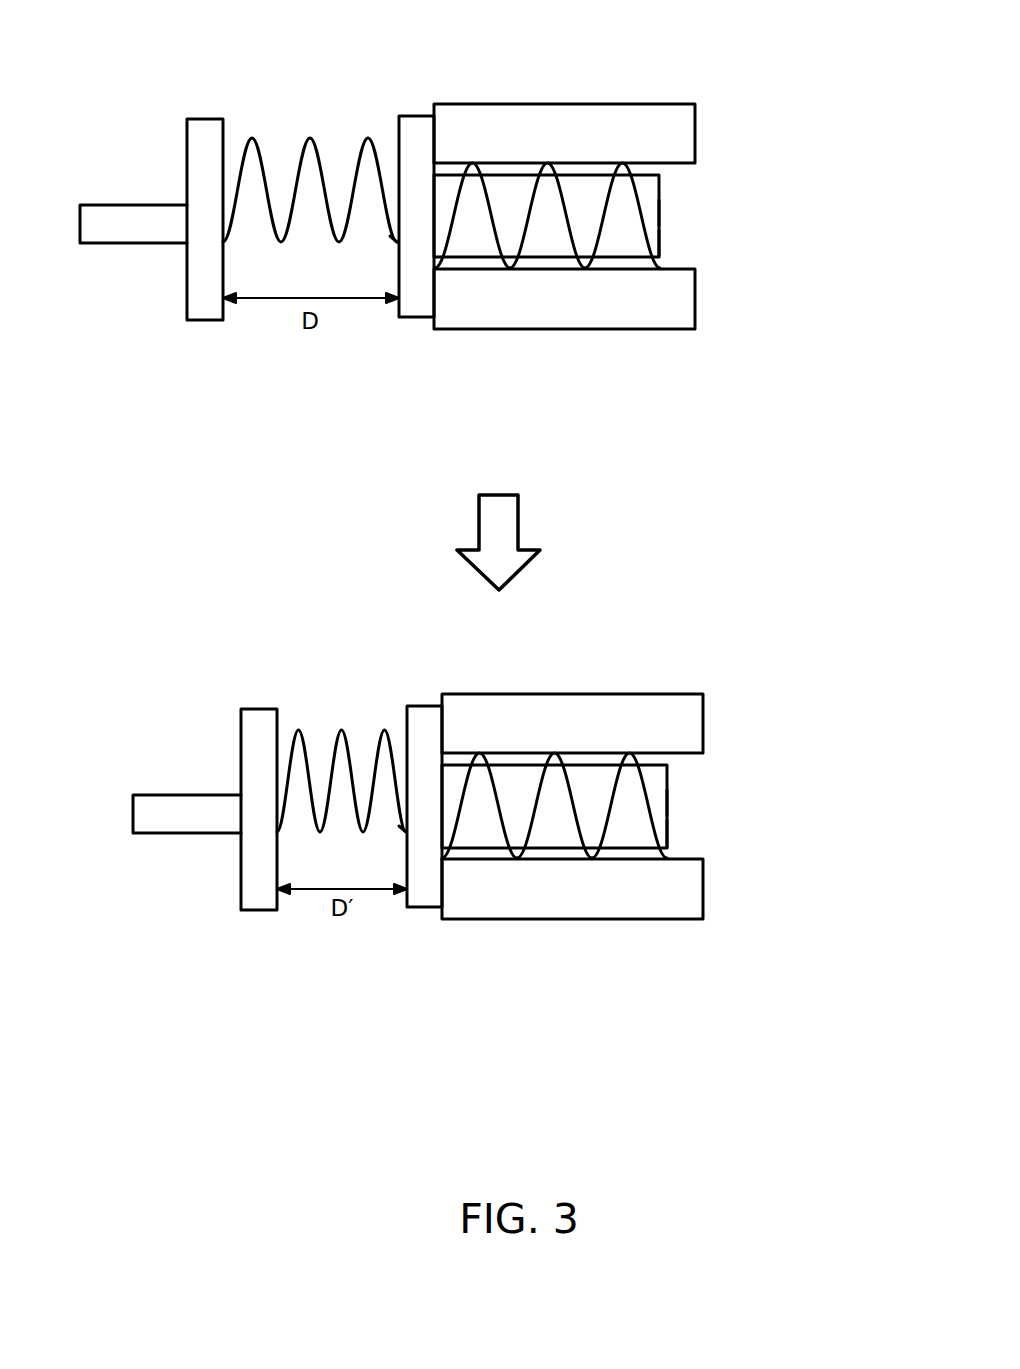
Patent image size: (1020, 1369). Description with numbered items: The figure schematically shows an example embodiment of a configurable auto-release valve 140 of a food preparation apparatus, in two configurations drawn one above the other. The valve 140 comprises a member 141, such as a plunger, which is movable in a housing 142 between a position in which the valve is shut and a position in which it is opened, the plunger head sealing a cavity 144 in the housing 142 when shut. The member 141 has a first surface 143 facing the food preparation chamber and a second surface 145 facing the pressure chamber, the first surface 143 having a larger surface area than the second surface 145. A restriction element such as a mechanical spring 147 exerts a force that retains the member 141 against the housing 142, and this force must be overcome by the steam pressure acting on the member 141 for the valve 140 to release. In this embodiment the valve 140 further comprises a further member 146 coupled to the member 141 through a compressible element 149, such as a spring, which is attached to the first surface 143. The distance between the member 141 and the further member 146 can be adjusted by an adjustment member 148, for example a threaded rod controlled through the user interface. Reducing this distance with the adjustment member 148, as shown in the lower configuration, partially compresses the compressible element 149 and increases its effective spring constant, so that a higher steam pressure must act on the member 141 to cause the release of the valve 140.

The auto-release valve 140 is at (615, 515).
The member 141 is at (418, 302).
The housing 142 is at (470, 133).
The first surface 143 is at (395, 137).
The cavity 144 is at (683, 242).
The second surface 145 is at (660, 213).
The further member 146 is at (207, 313).
The mechanical spring 147 is at (627, 163).
The adjustment member 148 is at (112, 233).
The compressible element 149 is at (252, 140).